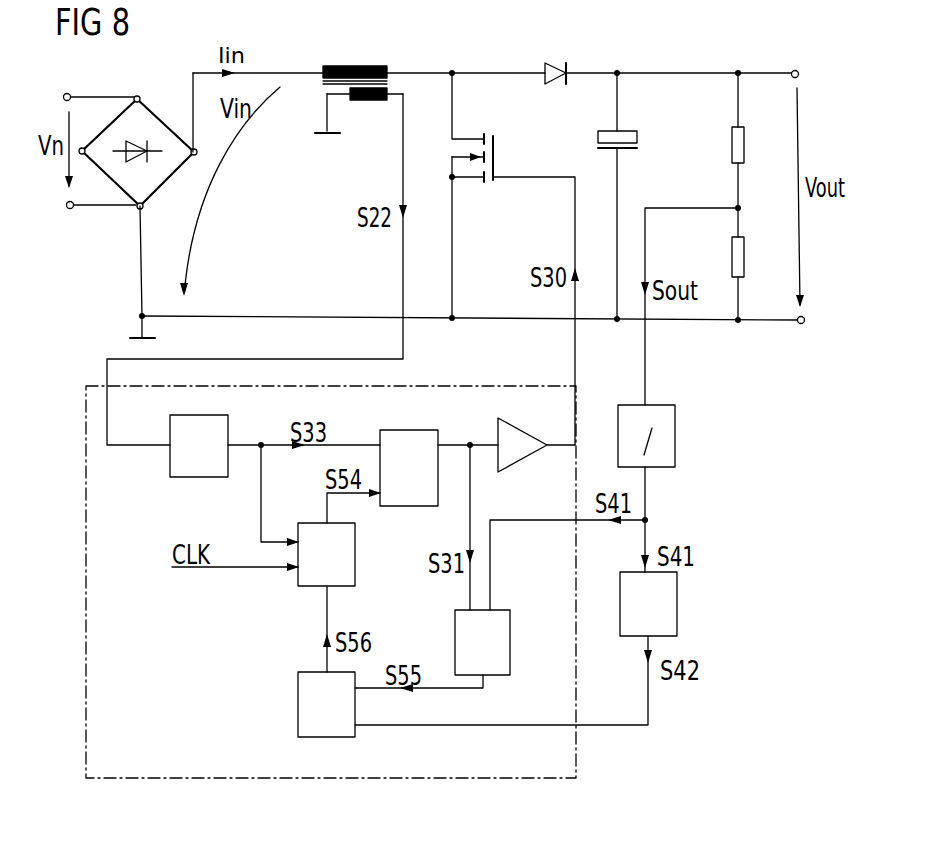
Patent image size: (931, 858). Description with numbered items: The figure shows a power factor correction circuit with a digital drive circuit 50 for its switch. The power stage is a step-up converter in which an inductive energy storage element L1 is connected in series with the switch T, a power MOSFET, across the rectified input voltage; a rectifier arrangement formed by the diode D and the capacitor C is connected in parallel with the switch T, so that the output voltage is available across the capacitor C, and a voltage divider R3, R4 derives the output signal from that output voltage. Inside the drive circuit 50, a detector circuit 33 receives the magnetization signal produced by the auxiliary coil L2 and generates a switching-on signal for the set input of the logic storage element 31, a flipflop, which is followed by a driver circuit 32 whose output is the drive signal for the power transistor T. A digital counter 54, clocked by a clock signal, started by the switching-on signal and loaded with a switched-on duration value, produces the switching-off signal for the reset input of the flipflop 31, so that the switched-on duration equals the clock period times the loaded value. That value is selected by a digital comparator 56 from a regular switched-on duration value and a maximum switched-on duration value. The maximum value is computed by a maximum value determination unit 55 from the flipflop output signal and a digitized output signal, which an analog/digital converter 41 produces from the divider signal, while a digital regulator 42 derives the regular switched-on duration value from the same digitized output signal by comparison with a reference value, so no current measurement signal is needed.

The inductive energy storage element L1 is at (362, 66).
The auxiliary coil L2 is at (366, 101).
The switch T is at (496, 158).
The diode D is at (568, 70).
The capacitor C is at (623, 151).
The voltage divider resistor R3 is at (732, 150).
The voltage divider resistor R4 is at (732, 252).
The logic storage element 31 is at (408, 507).
The driver circuit 32 is at (527, 461).
The detector circuit 33 is at (170, 430).
The analog/digital converter 41 is at (676, 437).
The digital regulator 42 is at (677, 602).
The drive circuit 50 is at (577, 735).
The digital counter 54 is at (310, 587).
The maximum value determination unit 55 is at (455, 642).
The digital comparator 56 is at (298, 706).